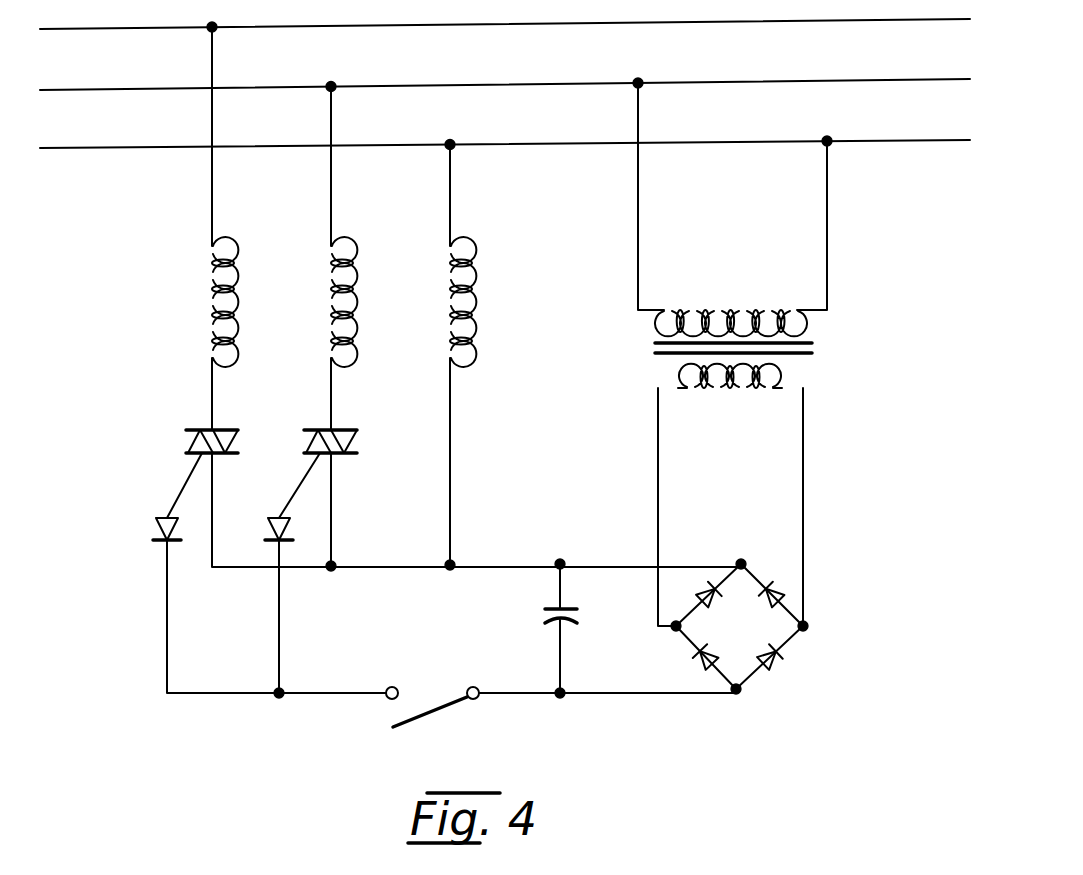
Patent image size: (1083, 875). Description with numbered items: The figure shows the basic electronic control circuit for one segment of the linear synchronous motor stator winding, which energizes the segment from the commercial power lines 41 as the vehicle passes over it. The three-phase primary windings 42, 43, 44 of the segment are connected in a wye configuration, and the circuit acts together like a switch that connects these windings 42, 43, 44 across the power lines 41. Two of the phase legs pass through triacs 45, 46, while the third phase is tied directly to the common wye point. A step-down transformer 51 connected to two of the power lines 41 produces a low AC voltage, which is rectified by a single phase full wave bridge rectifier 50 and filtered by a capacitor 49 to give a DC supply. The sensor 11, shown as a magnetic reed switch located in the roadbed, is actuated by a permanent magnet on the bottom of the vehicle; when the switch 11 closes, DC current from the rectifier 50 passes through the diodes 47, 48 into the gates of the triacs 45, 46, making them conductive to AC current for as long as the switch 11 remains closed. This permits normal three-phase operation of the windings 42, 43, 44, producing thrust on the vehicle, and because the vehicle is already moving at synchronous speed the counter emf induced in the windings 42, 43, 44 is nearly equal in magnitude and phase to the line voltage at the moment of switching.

The commercial power lines 41 is at (520, 143).
The phase winding 42 is at (214, 290).
The phase winding 43 is at (332, 283).
The phase winding 44 is at (452, 243).
The triac 45 is at (199, 430).
The triac 46 is at (322, 430).
The diode 47 is at (163, 520).
The diode 48 is at (278, 521).
The capacitor 49 is at (550, 620).
The single phase full wave bridge rectifier 50 is at (789, 649).
The step-down transformer 51 is at (812, 345).
The sensor 11 is at (433, 708).